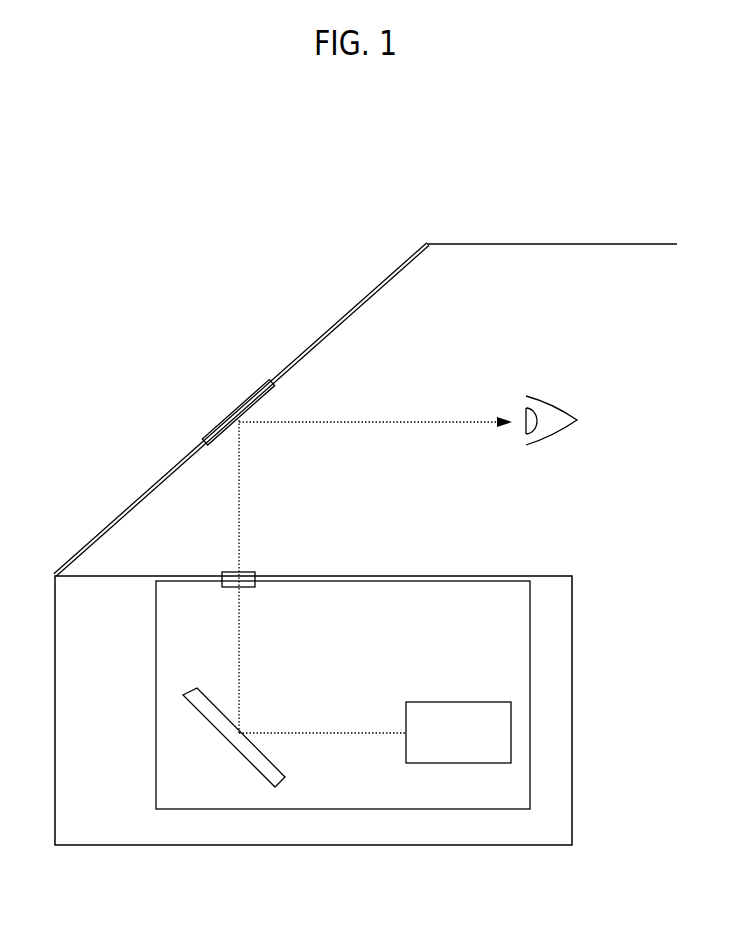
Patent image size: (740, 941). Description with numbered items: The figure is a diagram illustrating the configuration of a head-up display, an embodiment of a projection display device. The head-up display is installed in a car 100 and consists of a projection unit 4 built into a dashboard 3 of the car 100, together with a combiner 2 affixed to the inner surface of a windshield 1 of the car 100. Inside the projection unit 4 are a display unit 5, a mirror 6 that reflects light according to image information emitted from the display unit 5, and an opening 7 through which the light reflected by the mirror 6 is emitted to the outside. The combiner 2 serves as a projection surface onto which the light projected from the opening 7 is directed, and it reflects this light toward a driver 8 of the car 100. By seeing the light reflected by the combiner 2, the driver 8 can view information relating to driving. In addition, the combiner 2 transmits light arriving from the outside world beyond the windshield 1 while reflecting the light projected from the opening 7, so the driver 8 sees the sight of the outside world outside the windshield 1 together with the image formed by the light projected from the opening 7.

The car 100 is at (268, 268).
The windshield 1 is at (334, 326).
The combiner 2 is at (258, 393).
The dashboard 3 is at (562, 576).
The projection unit 4 is at (531, 663).
The display unit 5 is at (468, 701).
The mirror 6 is at (196, 691).
The opening 7 is at (250, 571).
The driver 8 is at (540, 406).